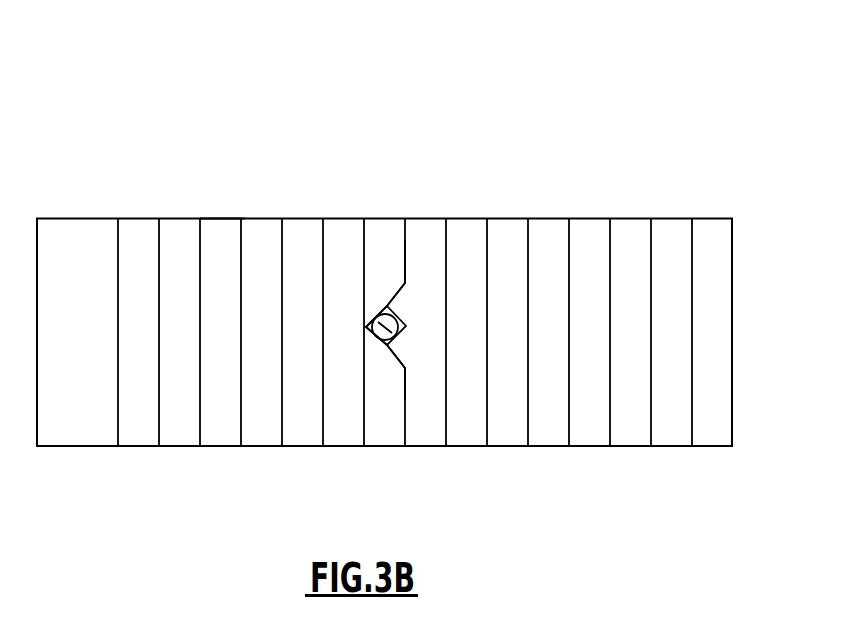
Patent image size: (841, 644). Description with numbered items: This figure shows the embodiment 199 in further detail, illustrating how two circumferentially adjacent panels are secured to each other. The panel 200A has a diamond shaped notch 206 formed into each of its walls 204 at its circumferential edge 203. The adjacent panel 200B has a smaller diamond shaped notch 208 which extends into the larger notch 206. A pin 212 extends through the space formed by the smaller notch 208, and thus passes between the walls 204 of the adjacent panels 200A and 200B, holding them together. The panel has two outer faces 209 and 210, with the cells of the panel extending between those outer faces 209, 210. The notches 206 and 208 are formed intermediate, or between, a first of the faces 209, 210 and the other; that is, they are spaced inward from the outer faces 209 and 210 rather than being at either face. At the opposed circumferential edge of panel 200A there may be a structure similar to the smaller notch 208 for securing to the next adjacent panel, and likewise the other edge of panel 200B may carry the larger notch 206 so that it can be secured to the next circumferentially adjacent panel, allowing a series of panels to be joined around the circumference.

The embodiment 199 is at (503, 93).
The panel 200A is at (180, 255).
The panel 200B is at (593, 257).
The outer face 209 is at (222, 218).
The circumferential edge 203 is at (403, 218).
The wall 204 is at (387, 247).
The smaller diamond shaped notch 208 is at (413, 330).
The diamond shaped notch 206 is at (377, 343).
The pin 212 is at (388, 330).
The outer face 210 is at (188, 446).